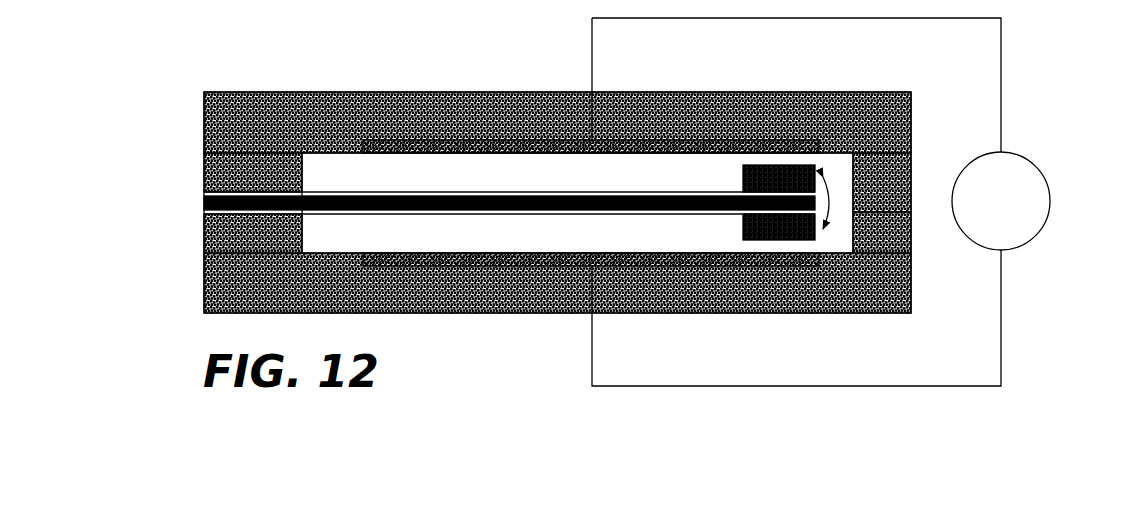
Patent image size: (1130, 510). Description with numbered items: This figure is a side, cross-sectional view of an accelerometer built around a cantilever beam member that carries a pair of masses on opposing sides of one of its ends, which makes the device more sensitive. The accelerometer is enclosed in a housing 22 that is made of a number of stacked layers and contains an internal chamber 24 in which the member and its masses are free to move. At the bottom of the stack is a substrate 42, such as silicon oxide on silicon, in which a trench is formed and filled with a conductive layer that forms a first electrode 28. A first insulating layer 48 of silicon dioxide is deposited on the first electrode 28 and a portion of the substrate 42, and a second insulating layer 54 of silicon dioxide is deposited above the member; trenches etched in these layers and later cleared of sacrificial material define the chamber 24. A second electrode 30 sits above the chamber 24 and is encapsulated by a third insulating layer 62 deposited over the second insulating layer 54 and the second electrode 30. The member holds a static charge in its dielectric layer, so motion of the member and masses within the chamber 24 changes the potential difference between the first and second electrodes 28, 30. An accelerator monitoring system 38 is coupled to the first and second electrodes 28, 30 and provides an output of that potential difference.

The housing 22 is at (205, 73).
The third insulating layer 62 is at (216, 137).
The second insulating layer 54 is at (216, 172).
The first insulating layer 48 is at (216, 235).
The substrate 42 is at (216, 286).
The internal chamber 24 is at (386, 246).
The first electrode 28 is at (607, 253).
The second electrode 30 is at (809, 139).
The accelerator monitoring system 38 is at (1032, 200).